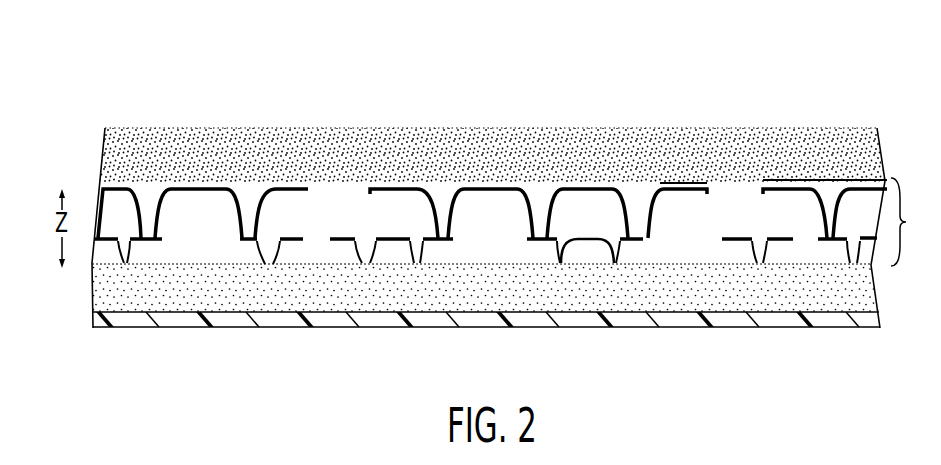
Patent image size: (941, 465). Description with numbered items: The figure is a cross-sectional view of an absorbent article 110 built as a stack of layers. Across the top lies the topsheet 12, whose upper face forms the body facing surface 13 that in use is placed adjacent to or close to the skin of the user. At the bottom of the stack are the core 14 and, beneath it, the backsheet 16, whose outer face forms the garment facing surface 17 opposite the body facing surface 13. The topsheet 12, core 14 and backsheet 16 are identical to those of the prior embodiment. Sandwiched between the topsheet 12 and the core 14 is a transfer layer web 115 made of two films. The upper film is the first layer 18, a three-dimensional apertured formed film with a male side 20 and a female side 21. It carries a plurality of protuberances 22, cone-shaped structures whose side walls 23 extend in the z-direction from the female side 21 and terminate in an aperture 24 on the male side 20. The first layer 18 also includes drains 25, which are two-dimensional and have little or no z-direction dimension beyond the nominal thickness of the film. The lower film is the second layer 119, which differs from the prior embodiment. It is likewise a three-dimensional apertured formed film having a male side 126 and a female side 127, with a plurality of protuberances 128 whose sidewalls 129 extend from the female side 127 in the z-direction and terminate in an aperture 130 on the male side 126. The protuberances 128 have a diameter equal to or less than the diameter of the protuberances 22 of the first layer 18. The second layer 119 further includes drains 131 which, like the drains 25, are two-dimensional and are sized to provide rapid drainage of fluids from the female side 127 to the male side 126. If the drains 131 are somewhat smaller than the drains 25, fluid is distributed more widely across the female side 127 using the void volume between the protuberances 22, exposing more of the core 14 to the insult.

The absorbent article 110 is at (510, 88).
The topsheet 12 is at (298, 160).
The body facing surface 13 is at (350, 128).
The core 14 is at (132, 303).
The backsheet 16 is at (180, 316).
The garment facing surface 17 is at (258, 326).
The first layer 18 is at (185, 180).
The male side 20 is at (828, 238).
The female side 21 is at (110, 175).
The protuberances 22 is at (545, 184).
The side walls 23 is at (257, 220).
The aperture 24 is at (637, 233).
The drains 25 is at (352, 185).
The transfer layer web 115 is at (914, 222).
The second layer 119 is at (729, 228).
The male side 126 is at (277, 268).
The female side 127 is at (650, 227).
The protuberances 128 is at (275, 253).
The sidewalls 129 is at (375, 240).
The aperture 130 is at (418, 257).
The drains 131 is at (200, 238).